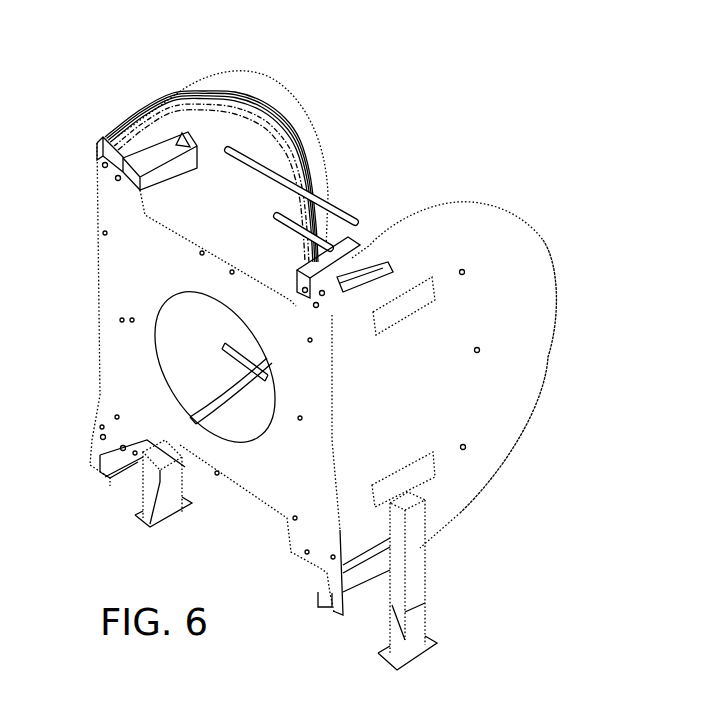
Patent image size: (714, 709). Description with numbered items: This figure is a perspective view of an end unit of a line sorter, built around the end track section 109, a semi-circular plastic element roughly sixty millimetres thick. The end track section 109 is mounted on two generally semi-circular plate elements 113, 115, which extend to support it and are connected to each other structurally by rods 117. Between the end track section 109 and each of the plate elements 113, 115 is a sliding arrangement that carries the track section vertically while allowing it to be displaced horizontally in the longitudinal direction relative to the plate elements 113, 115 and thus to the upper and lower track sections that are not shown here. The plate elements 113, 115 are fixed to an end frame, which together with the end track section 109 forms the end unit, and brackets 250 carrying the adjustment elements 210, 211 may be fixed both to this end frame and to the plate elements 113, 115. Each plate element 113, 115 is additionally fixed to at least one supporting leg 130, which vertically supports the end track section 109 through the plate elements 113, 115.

The end track section 109 is at (187, 118).
The plate element 113 is at (318, 150).
The plate element 115 is at (520, 347).
The rods 117 is at (279, 179).
The supporting leg 130 is at (157, 488).
The adjustment element 210 is at (322, 278).
The adjustment element 211 is at (127, 157).
The brackets 250 is at (312, 260).